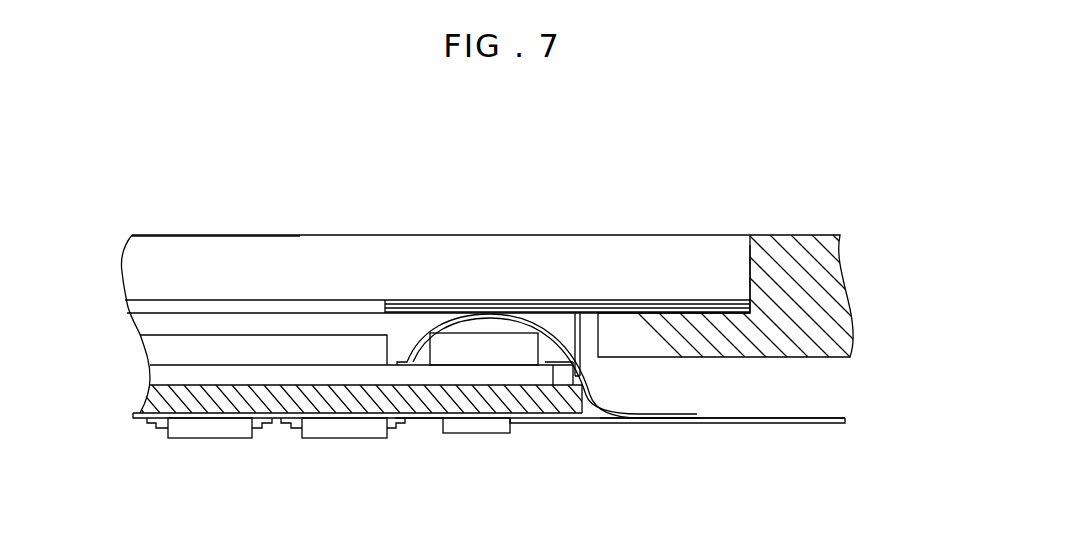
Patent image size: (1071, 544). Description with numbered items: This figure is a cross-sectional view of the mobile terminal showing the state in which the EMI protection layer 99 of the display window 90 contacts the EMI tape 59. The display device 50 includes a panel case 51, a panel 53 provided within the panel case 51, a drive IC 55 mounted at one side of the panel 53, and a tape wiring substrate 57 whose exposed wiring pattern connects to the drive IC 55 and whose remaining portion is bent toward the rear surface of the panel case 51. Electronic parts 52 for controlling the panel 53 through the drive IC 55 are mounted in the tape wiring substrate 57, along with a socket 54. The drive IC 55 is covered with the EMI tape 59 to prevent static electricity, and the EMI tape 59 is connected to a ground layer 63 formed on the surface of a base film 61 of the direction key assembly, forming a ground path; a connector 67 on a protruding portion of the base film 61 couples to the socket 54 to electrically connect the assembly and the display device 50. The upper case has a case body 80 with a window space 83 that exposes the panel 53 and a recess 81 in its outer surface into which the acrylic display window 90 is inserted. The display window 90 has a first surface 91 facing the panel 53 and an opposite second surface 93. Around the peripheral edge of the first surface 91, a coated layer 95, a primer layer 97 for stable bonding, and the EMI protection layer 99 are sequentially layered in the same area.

The display device 50 is at (136, 418).
The panel case 51 is at (212, 397).
The electronic parts 52 is at (215, 438).
The panel 53 is at (150, 350).
The socket 54 is at (478, 427).
The drive IC 55 is at (450, 340).
The tape wiring substrate 57 is at (426, 420).
The EMI tape 59 is at (493, 313).
The base film 61 is at (661, 426).
The ground layer 63 is at (818, 418).
The connector 67 is at (537, 424).
The case body 80 is at (800, 244).
The recess 81 is at (750, 254).
The window space 83 is at (592, 350).
The display window 90 is at (336, 243).
The first surface 91 is at (138, 312).
The second surface 93 is at (157, 235).
The coated layer 95 is at (590, 303).
The primer layer 97 is at (636, 307).
The EMI protection layer 99 is at (678, 310).